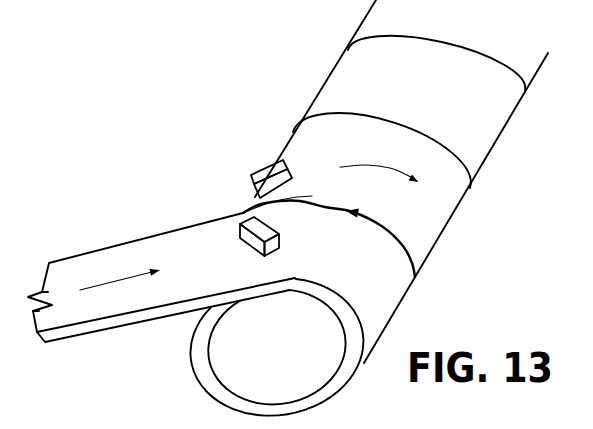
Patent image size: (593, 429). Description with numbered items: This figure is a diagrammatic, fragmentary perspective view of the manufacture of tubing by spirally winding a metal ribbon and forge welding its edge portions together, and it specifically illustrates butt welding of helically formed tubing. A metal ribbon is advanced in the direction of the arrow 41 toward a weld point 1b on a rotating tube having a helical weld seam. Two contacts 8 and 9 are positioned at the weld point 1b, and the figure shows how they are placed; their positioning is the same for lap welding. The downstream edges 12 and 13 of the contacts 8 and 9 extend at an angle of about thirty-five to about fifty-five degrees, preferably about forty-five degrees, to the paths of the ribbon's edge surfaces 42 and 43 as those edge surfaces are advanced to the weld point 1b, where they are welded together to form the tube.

The weld point 1b is at (358, 210).
The contact 8 is at (246, 248).
The contact 9 is at (270, 170).
The downstream edge 12 is at (265, 247).
The downstream edge 13 is at (297, 159).
The arrow 41 is at (112, 284).
The edge surface 42 is at (152, 237).
The edge surface 43 is at (256, 200).